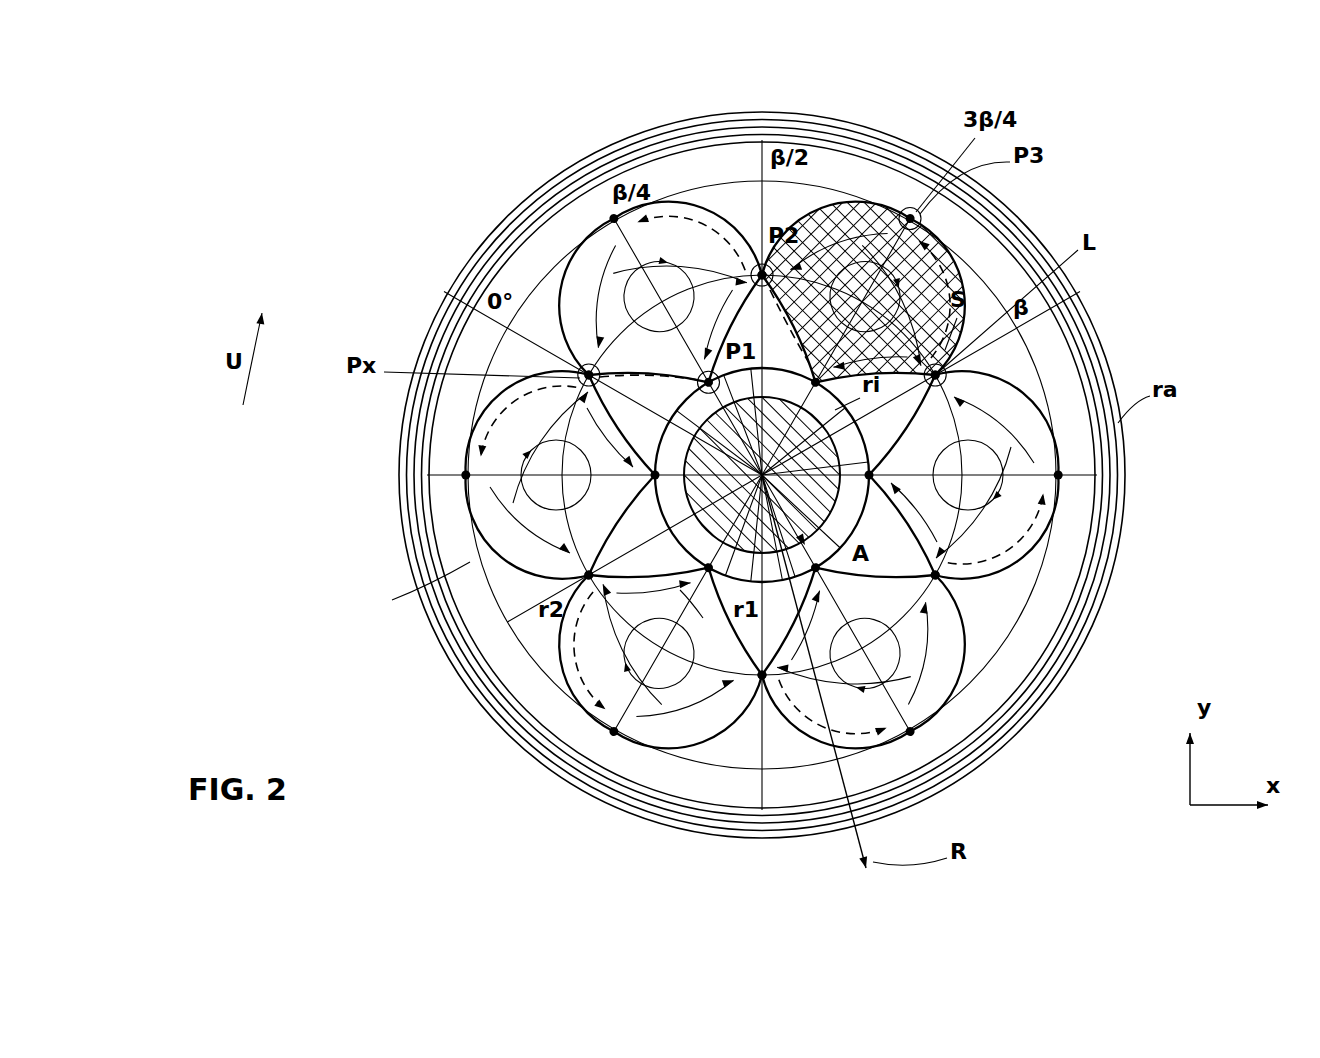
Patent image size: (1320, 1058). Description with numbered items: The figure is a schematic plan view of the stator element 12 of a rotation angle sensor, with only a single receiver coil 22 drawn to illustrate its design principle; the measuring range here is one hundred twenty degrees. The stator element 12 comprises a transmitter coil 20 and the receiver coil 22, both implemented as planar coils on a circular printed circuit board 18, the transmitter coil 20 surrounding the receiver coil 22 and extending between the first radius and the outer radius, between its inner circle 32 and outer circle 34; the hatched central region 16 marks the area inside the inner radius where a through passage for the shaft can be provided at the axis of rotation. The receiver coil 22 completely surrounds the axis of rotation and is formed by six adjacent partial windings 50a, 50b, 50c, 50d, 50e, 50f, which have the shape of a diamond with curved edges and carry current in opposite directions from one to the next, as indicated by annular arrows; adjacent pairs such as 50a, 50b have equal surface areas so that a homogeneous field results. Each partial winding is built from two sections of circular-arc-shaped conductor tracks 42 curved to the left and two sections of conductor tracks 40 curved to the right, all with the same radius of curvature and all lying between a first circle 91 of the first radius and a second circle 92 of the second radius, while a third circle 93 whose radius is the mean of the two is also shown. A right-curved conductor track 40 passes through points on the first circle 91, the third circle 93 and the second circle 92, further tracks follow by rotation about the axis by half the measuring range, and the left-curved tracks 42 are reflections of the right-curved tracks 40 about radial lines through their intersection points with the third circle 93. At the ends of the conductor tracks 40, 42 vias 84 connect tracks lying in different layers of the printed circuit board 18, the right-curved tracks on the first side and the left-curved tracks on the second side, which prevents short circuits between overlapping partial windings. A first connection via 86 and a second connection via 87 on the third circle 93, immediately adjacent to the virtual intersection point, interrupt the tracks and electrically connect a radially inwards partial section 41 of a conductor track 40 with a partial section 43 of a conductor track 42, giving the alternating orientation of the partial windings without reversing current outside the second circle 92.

The stator element 12 is at (1062, 222).
The hub 16 is at (752, 440).
The printed circuit board 18 is at (422, 655).
The transmitter coil 20 is at (445, 312).
The receiver coil 22 is at (805, 237).
The inner circle 32 is at (845, 430).
The outer circle 34 is at (1110, 330).
The conductor track curved to the right 40 is at (858, 246).
The radially inwards partial section 41 is at (598, 268).
The conductor track curved to the left 42 is at (948, 210).
The partial section 43 is at (575, 300).
The partial winding 50a is at (864, 250).
The partial winding 50b is at (1032, 410).
The partial winding 50c is at (980, 662).
The partial winding 50d is at (611, 730).
The partial winding 50e is at (478, 522).
The partial winding 50f is at (592, 255).
The vias 84 is at (612, 215).
The first connection via 86 is at (582, 380).
The second connection via 87 is at (580, 373).
The first circle 91 is at (703, 618).
The second circle 92 is at (575, 612).
The third circle 93 is at (625, 650).